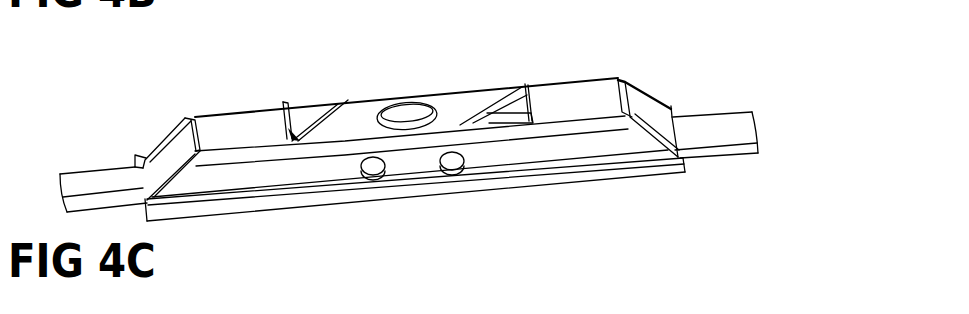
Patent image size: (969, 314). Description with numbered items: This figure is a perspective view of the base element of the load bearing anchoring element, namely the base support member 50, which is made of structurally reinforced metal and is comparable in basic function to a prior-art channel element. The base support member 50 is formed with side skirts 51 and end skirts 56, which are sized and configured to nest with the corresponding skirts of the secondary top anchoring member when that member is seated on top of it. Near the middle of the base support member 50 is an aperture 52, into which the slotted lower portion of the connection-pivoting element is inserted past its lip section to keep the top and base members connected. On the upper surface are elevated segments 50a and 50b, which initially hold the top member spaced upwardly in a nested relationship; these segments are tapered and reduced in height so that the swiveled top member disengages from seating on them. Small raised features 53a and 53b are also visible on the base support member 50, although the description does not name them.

The base support member 50 is at (449, 76).
The elevated segment 50a is at (544, 88).
The elevated segment 50b is at (333, 102).
The side skirt 51 is at (272, 196).
The aperture 52 is at (433, 102).
The first boss 53a is at (386, 182).
The second boss 53b is at (454, 176).
The end skirt 56 is at (165, 140).